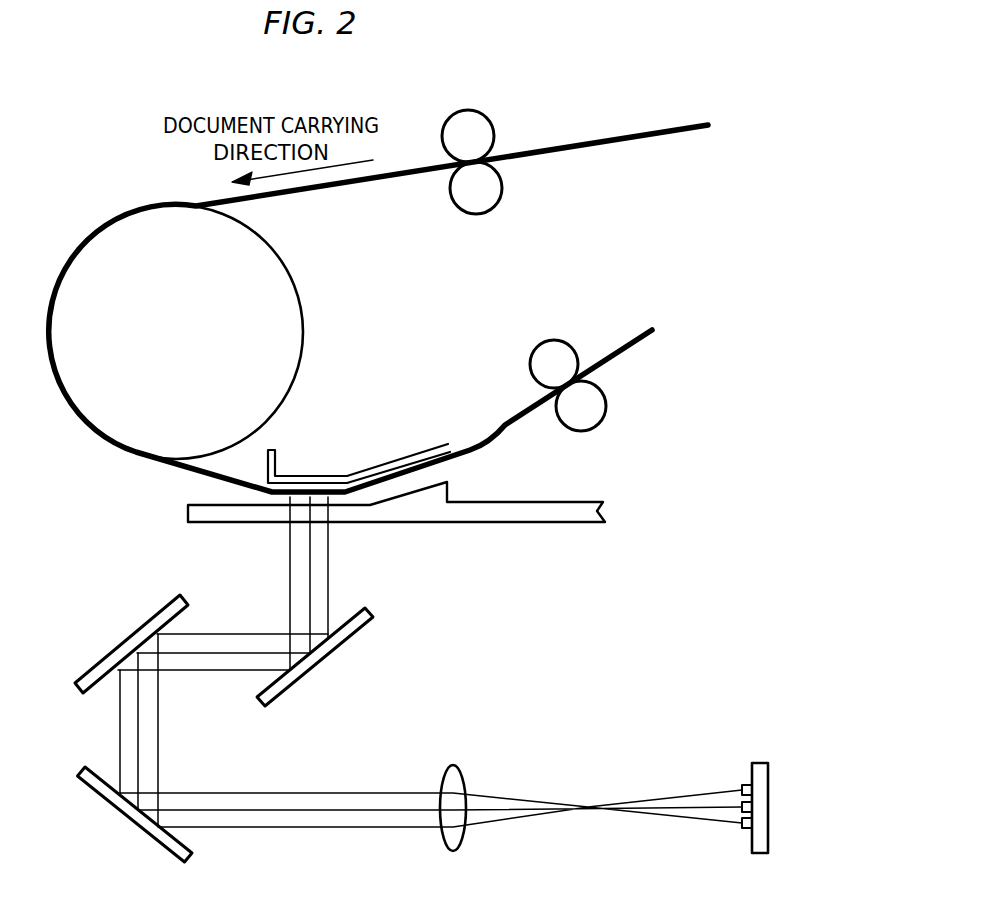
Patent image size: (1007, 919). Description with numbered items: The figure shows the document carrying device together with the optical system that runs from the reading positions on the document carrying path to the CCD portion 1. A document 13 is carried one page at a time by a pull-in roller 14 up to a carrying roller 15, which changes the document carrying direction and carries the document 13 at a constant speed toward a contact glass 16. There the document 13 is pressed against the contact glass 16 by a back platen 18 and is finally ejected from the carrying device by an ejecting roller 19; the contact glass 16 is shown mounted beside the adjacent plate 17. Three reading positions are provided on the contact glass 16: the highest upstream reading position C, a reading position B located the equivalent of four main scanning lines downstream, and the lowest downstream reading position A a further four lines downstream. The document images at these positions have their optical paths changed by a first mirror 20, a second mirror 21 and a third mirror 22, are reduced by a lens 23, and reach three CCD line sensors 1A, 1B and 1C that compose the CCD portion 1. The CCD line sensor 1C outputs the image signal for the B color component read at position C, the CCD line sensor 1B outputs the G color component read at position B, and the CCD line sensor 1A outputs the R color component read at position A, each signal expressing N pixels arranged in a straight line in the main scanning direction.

The CCD portion 1 is at (757, 734).
The CCD line sensor 1A is at (745, 788).
The CCD line sensor 1B is at (745, 806).
The CCD line sensor 1C is at (745, 827).
The document 13 is at (588, 138).
The pull-in roller 14 is at (486, 112).
The carrying roller 15 is at (303, 306).
The contact glass 16 is at (345, 505).
The glass plate 17 is at (508, 510).
The back platen 18 is at (298, 478).
The ejecting roller 19 is at (553, 340).
The first mirror 20 is at (372, 614).
The second mirror 21 is at (88, 664).
The third mirror 22 is at (80, 770).
The lens 23 is at (452, 768).
The lowest downstream reading position A is at (330, 508).
The reading position B is at (310, 508).
The highest upstream reading position C is at (290, 508).